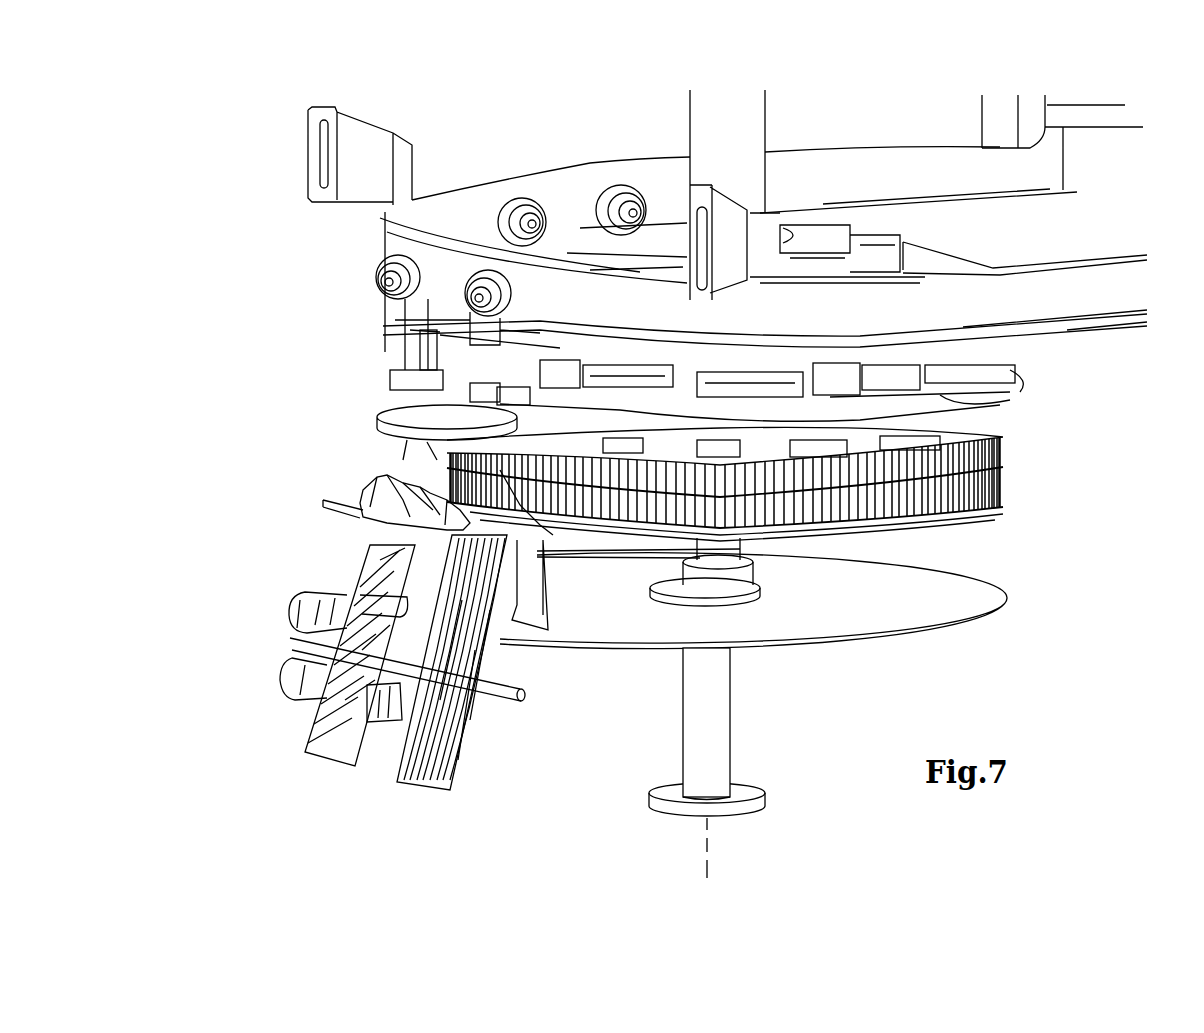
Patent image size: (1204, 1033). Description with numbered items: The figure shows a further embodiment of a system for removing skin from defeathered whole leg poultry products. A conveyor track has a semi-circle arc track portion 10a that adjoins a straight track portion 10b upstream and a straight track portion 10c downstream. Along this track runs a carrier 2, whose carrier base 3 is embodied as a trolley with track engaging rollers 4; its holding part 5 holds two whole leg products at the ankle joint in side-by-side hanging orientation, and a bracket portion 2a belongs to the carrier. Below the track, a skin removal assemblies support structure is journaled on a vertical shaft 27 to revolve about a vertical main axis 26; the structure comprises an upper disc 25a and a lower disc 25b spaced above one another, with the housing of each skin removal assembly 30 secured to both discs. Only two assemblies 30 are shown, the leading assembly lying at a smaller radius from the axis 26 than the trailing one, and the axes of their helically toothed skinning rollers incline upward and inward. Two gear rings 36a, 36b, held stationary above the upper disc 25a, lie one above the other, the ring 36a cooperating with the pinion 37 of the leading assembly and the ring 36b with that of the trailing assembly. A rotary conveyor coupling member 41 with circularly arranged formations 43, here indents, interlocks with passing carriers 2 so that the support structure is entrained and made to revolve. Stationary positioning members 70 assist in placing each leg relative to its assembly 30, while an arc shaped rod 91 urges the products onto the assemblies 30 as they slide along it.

The carrier 2 is at (338, 392).
The head bracket 2a is at (350, 344).
The carrier base 3 is at (390, 403).
The track engaging rollers 4 is at (407, 262).
The holding part 5 is at (339, 487).
The circle arc track portion 10a is at (374, 282).
The straight track portion 10b is at (1013, 195).
The straight track portion 10c is at (1113, 320).
The upper disc 25a is at (960, 520).
The lower disc 25b is at (1010, 596).
The vertical main axis 26 is at (708, 845).
The vertical shaft 27 is at (742, 548).
The skin removal assembly 30 is at (276, 738).
The gear ring 36a is at (993, 490).
The gear ring 36b is at (993, 455).
The pinion 37 is at (555, 530).
The rotary conveyor coupling member 41 is at (1017, 392).
The formations 43 is at (1041, 376).
The poultry product positioning member 70 is at (307, 590).
The arc shaped rod 91 is at (493, 687).